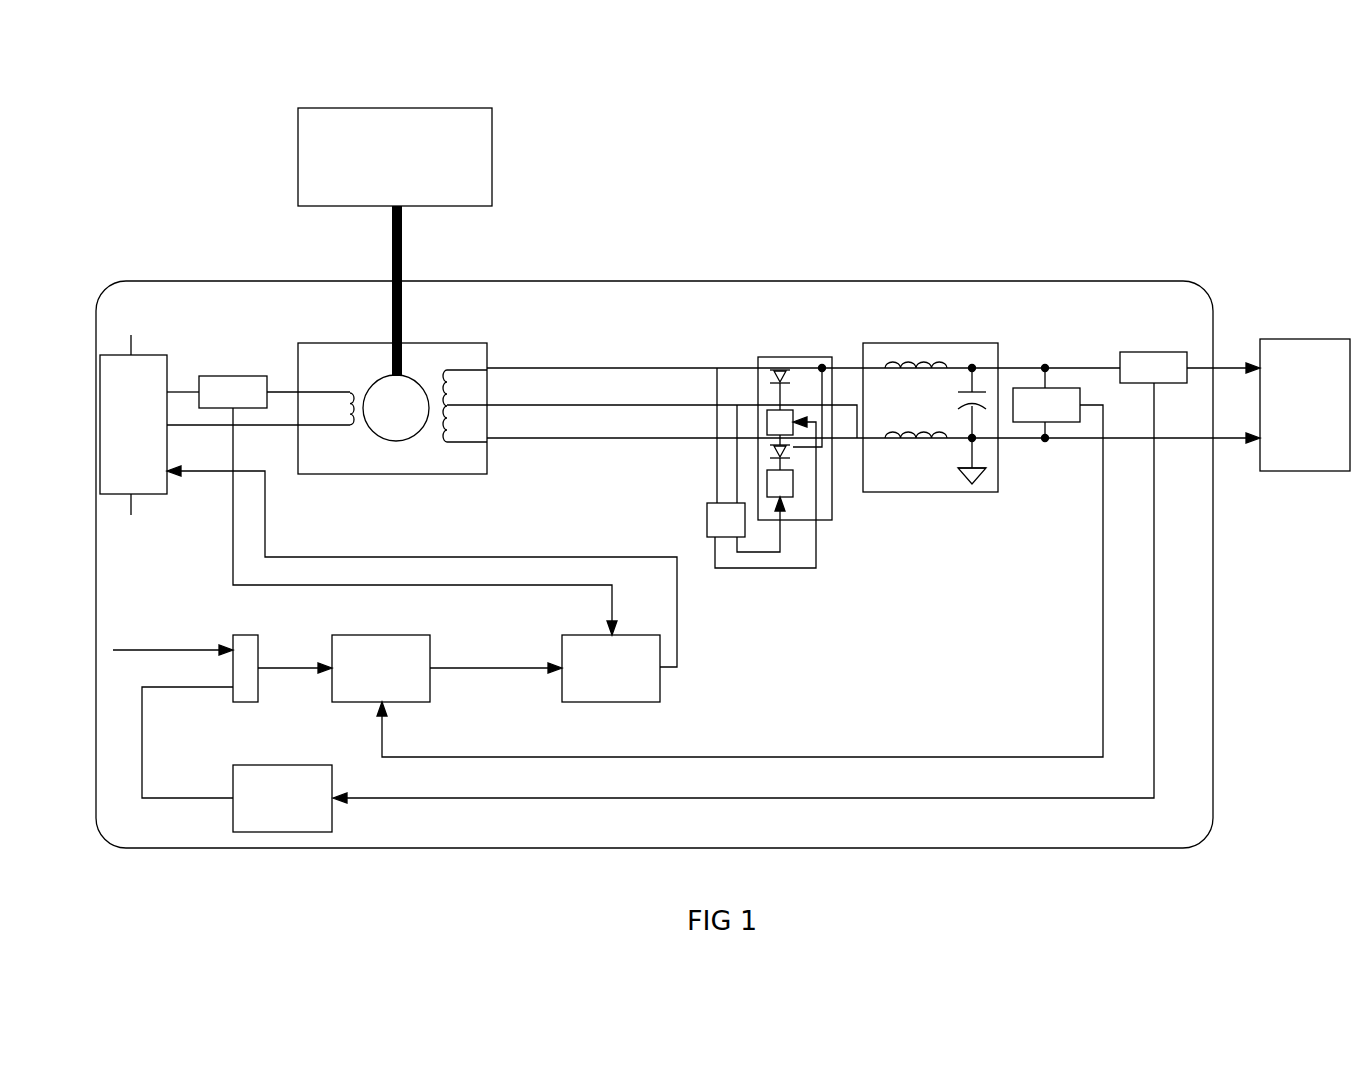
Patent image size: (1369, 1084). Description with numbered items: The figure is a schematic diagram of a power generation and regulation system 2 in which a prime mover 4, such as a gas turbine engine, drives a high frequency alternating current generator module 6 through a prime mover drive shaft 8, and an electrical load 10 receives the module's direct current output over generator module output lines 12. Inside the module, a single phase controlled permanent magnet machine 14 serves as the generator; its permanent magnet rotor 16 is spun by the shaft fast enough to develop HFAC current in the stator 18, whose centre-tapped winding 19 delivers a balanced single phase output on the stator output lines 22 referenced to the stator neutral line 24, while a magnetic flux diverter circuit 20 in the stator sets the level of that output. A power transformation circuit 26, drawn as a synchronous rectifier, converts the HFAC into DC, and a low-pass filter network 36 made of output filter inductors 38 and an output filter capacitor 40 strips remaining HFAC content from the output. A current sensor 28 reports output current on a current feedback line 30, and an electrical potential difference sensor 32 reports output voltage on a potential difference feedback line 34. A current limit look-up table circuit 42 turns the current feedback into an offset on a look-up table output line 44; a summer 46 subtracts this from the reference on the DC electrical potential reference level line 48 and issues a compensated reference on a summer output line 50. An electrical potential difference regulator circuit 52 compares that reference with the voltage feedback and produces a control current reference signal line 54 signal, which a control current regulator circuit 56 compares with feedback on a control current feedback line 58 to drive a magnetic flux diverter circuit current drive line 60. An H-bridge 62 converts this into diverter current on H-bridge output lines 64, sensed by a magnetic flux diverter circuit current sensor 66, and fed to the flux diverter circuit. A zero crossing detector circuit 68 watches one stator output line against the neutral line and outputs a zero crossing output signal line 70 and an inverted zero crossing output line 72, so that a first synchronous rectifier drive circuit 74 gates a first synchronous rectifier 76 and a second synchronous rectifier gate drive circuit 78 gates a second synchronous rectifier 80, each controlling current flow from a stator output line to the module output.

The power generation and regulation system 2 is at (972, 198).
The prime mover 4 is at (388, 168).
The HFAC generator module 6 is at (728, 277).
The prime mover drive shaft 8 is at (406, 267).
The electrical load 10 is at (1294, 415).
The generator module output lines 12 is at (1218, 370).
The permanent magnet machine 14 is at (494, 341).
The permanent magnet rotor 16 is at (385, 419).
The stator 18 is at (392, 474).
The winding 19 is at (446, 444).
The magnetic flux diverter circuit 20 is at (348, 430).
The stator output lines 22 is at (513, 369).
The stator neutral line 24 is at (513, 406).
The power transformation circuit 26 is at (793, 357).
The current sensor 28 is at (1142, 379).
The current feedback line 30 is at (1154, 482).
The electrical potential difference sensor 32 is at (1035, 416).
The potential difference feedback line 34 is at (1103, 482).
The low-pass filter network 36 is at (935, 493).
The output filter inductors 38 is at (914, 369).
The output filter capacitor 40 is at (959, 393).
The current limit look-up table circuit 42 is at (271, 809).
The look-up table output line 44 is at (142, 727).
The summer 46 is at (245, 635).
The DC electrical potential reference level line 48 is at (147, 650).
The summer output line 50 is at (268, 668).
The electrical potential difference regulator circuit 52 is at (370, 679).
The control current reference signal line 54 is at (480, 668).
The control current regulator circuit 56 is at (600, 679).
The control current feedback line 58 is at (478, 586).
The magnetic flux diverter circuit current drive line 60 is at (481, 556).
The H-bridge 62 is at (122, 435).
The H-bridge output lines 64 is at (283, 388).
The magnetic flux diverter circuit current sensor 66 is at (222, 403).
The zero crossing detector circuit 68 is at (707, 518).
The zero crossing output signal line 70 is at (780, 525).
The inverted zero crossing output line 72 is at (816, 525).
The first synchronous rectifier drive circuit 74 is at (793, 483).
The first synchronous rectifier 76 is at (793, 448).
The second synchronous rectifier gate drive circuit 78 is at (767, 420).
The second synchronous rectifier 80 is at (773, 372).